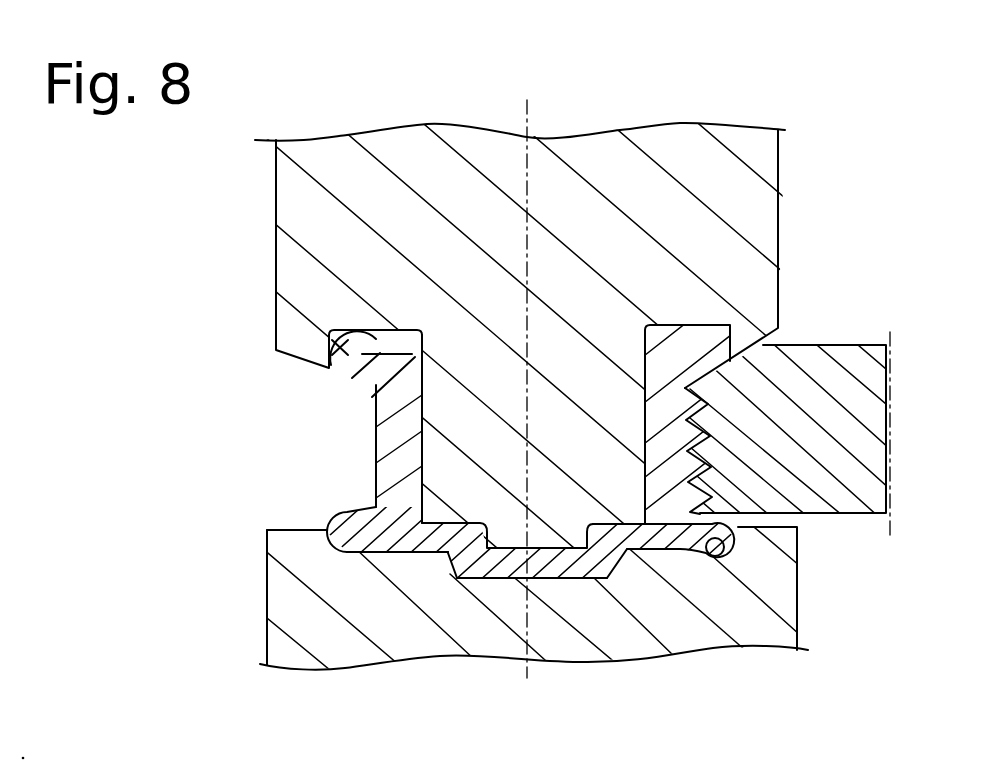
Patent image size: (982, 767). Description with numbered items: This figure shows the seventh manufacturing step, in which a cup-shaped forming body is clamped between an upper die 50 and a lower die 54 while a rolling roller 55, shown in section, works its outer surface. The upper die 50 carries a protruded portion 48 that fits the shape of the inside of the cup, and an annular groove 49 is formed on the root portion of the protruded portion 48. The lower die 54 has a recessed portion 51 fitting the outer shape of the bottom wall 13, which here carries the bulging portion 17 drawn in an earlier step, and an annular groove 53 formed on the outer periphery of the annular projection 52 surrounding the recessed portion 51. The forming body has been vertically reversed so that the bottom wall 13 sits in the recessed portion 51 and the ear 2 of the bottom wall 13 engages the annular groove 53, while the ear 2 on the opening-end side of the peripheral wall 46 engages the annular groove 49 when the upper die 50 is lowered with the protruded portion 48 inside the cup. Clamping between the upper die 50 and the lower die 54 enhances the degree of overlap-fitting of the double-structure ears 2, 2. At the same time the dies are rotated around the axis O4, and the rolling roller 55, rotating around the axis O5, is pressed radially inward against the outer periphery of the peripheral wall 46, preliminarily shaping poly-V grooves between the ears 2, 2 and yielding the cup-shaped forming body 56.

The upper die 50 is at (278, 189).
The lower die 54 is at (292, 628).
The rolling roller 55 is at (803, 352).
The cup-shaped forming body 56 is at (364, 416).
The peripheral wall 46 is at (376, 444).
The protruded portion 48 is at (433, 470).
The annular groove 49 is at (355, 388).
The ear 2 is at (333, 345).
The bottom wall 13 is at (418, 548).
The recessed portion 51 is at (460, 585).
The bulging portion 17 is at (593, 563).
The annular projection 52 is at (660, 555).
The annular groove 53 is at (703, 557).
The rotation axis of the dies O4 is at (527, 125).
The rotation axis of the rolling roller O5 is at (890, 332).